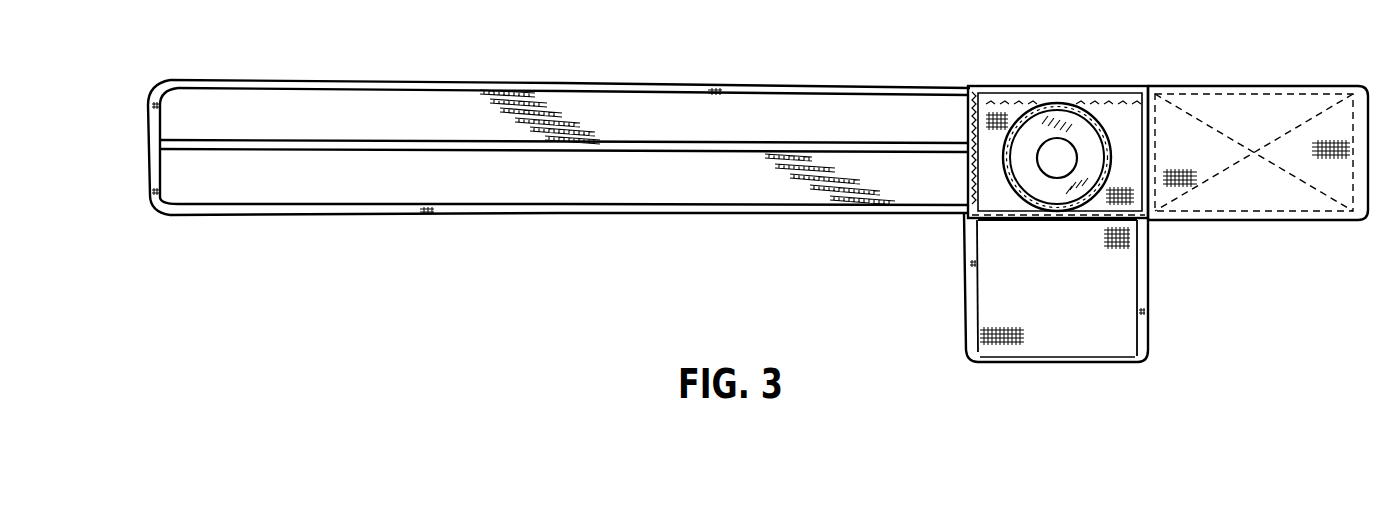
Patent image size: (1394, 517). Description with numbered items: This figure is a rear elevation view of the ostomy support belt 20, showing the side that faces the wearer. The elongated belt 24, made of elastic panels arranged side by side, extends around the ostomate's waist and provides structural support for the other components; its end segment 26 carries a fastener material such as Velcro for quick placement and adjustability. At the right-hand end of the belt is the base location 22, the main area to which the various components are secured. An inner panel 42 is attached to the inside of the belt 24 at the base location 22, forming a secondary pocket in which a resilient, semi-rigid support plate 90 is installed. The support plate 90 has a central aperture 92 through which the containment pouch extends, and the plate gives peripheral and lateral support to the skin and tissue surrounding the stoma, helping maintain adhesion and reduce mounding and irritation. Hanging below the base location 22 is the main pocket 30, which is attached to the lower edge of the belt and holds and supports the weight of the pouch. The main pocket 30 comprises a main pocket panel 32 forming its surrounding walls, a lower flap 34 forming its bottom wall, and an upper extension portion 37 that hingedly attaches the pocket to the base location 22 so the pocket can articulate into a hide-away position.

The ostomy support belt 20 is at (1142, 110).
The base location 22 is at (970, 80).
The belt 24 is at (696, 135).
The end segment 26 is at (1283, 108).
The main pocket 30 is at (958, 303).
The main pocket panel 32 is at (1142, 282).
The lower flap 34 is at (1062, 363).
The upper extension portion 37 is at (1013, 222).
The inner panel 42 is at (1123, 122).
The support plate 90 is at (1083, 137).
The aperture 92 is at (1050, 147).